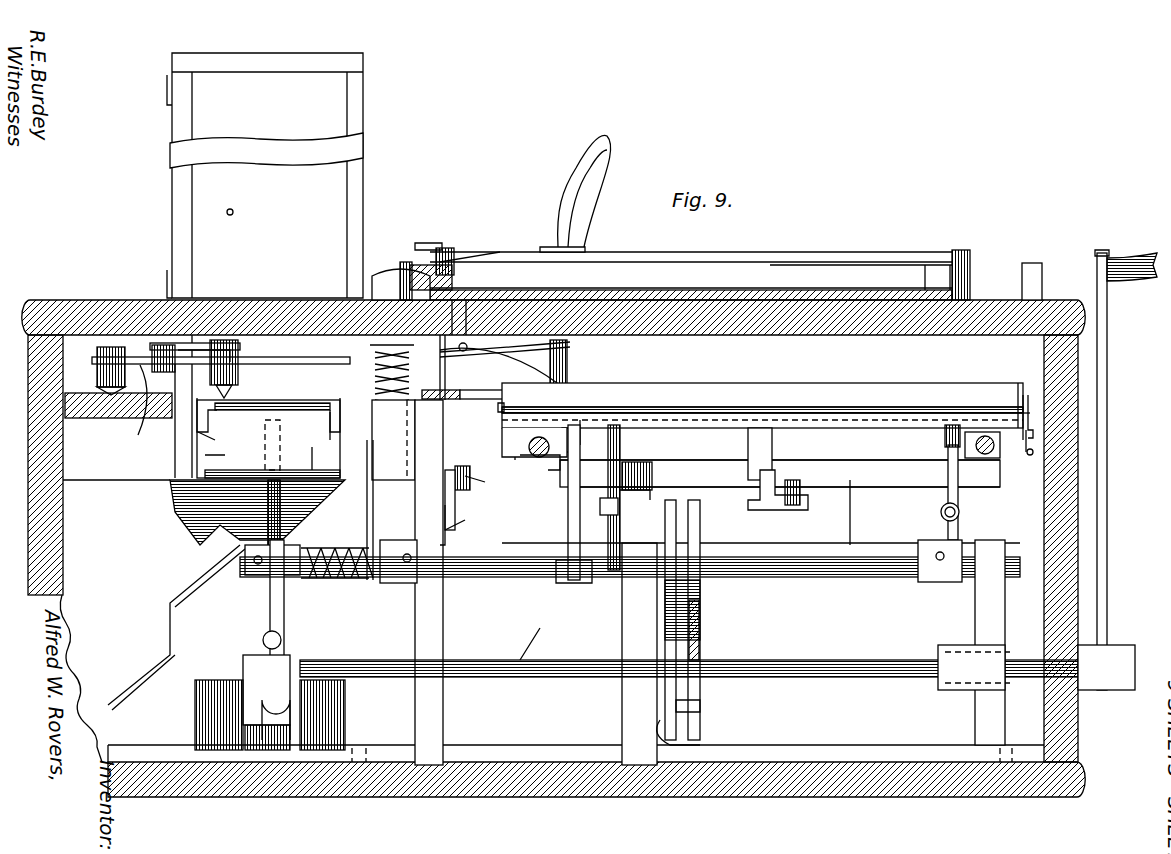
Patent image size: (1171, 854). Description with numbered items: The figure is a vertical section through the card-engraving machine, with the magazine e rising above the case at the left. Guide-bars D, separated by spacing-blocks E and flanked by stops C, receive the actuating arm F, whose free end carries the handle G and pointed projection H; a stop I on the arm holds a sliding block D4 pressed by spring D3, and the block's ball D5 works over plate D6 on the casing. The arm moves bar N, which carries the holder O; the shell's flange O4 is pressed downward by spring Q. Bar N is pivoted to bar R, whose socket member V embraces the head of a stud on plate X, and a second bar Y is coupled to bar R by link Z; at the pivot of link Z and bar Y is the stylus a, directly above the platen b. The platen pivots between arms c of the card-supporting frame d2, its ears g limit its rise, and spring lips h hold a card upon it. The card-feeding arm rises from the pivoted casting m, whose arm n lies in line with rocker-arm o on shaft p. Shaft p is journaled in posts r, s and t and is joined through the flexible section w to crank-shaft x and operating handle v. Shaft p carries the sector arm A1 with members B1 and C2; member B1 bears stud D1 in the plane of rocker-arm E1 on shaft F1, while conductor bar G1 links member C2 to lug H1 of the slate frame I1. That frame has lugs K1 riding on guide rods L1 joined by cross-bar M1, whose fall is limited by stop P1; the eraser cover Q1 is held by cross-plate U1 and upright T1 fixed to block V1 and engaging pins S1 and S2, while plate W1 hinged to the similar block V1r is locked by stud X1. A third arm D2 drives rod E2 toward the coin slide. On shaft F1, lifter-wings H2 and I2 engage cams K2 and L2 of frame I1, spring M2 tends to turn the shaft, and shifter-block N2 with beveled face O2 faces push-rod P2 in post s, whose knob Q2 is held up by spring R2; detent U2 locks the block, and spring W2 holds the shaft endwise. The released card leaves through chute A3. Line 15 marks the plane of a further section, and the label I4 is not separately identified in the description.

The magazine e is at (265, 175).
The section line 15 is at (313, 815).
The link Z is at (195, 345).
The second bar Y is at (302, 355).
The socket member V is at (96, 371).
The plate X is at (98, 400).
The bar R is at (155, 397).
The stylus or engraving point a is at (235, 388).
The spring lips h is at (338, 400).
The platen or card-holding table b is at (268, 439).
The lugs or ears g is at (328, 450).
The arms c is at (198, 435).
The card-supporting plate or frame d2 is at (262, 500).
The spring W2 is at (312, 545).
The rocker-arm o is at (262, 590).
The post r is at (290, 628).
The arm n is at (263, 640).
The pivoted block or casting m is at (270, 702).
The chute A3 is at (127, 462).
The spring R2 is at (406, 396).
The post s is at (435, 640).
The bar N is at (455, 397).
The flange O4 is at (570, 343).
The spring Q is at (550, 360).
The holder O is at (563, 384).
The locking-dog or detent U2 is at (395, 458).
The push-rod or shifter arm P2 is at (470, 490).
The beveled face O2 is at (452, 530).
The guide rods L1 is at (470, 512).
The shifter-block N2 is at (400, 583).
The ball D5 is at (455, 292).
The pin I4 is at (478, 292).
The guide-bars D is at (690, 285).
The plate D6 is at (665, 295).
The pointed projection H is at (530, 270).
The spacing-blocks E is at (968, 268).
The handle G is at (580, 185).
The actuating bar or arm F is at (502, 253).
The block D4 is at (401, 284).
The spring D3 is at (420, 248).
The knob Q2 is at (385, 270).
The stop I is at (446, 248).
The stops C is at (1037, 262).
The operating crank or handle v is at (1118, 525).
The cross-plate U1 is at (810, 385).
The cover Q1 is at (868, 392).
The frame I1 is at (885, 420).
The cross-bar M1 is at (712, 440).
The cam K2 is at (578, 428).
The pin S2 is at (498, 408).
The upright member T1 is at (500, 440).
The lugs K1 is at (539, 458).
The block V1 is at (515, 460).
The rocker-arm E1 is at (622, 455).
The member B1 is at (652, 490).
The wing or lifter-arm H2 is at (600, 505).
The stud or post D1 is at (600, 520).
The post t is at (630, 598).
The shaft p is at (761, 601).
The third arm D2 is at (678, 626).
The sector-shaped arm A1 is at (700, 600).
The rod E2 is at (695, 700).
The shaft F1 is at (790, 562).
The flexible shaft section w is at (820, 668).
The crank-shaft or section x is at (955, 678).
The stud or lug H1 is at (760, 454).
The member C2 is at (750, 503).
The actuating or conductor bar G1 is at (800, 500).
The stop P1 is at (861, 512).
The wing or lifter-arm I2 is at (948, 465).
The cam L2 is at (945, 435).
The spring M2 is at (960, 514).
The block V1r is at (1002, 458).
The pins S1 is at (1028, 400).
The plate W1 is at (1028, 413).
The stud or post X1 is at (1035, 432).